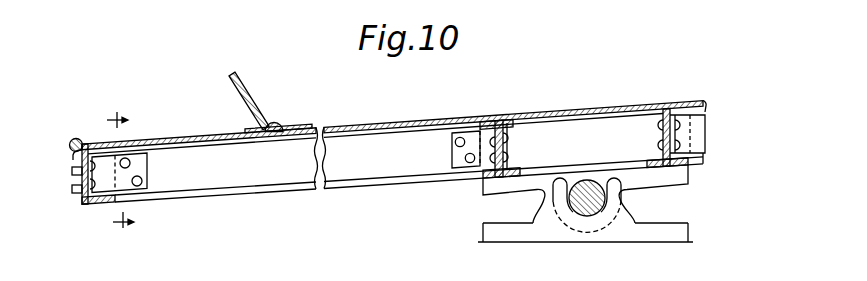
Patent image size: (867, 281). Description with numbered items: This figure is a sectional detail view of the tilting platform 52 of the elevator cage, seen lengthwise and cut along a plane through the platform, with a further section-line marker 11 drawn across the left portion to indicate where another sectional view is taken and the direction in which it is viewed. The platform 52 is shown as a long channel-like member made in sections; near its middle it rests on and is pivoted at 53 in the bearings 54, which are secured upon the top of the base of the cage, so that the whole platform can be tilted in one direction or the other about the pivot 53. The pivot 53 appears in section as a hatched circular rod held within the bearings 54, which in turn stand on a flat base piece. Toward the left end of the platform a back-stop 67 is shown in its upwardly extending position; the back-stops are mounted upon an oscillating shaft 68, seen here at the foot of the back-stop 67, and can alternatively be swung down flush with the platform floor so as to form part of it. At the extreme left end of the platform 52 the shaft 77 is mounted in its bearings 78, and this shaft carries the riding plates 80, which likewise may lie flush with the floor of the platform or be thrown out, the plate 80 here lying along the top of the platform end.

The section line 11 is at (122, 171).
The tilting platform 52 is at (688, 103).
The pivot 53 is at (591, 206).
The bearings 54 is at (657, 240).
The back-stop 67 is at (251, 98).
The oscillating shaft 68 is at (275, 137).
The shaft 77 is at (70, 143).
The bearings 78 is at (72, 153).
The riding plate 80 is at (110, 143).